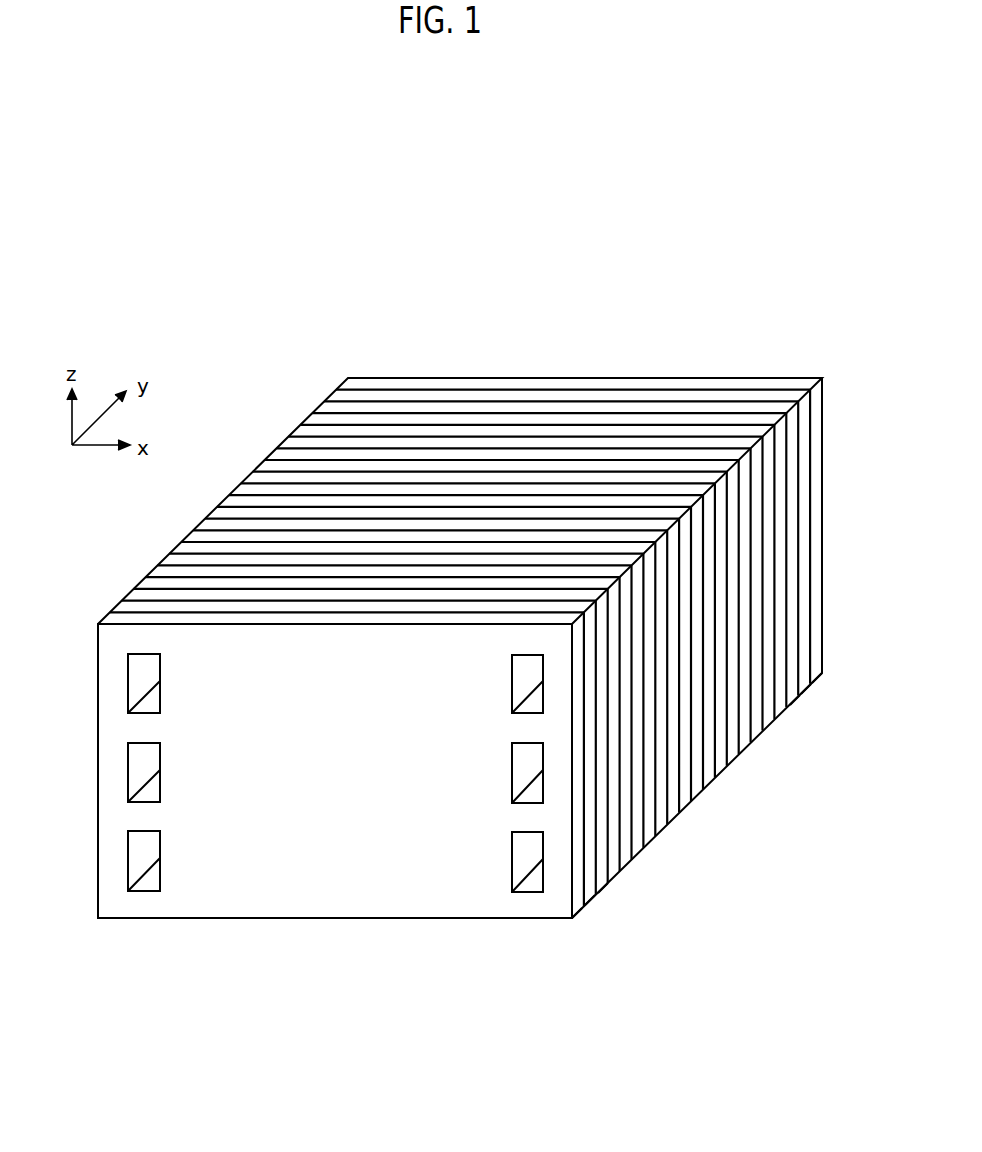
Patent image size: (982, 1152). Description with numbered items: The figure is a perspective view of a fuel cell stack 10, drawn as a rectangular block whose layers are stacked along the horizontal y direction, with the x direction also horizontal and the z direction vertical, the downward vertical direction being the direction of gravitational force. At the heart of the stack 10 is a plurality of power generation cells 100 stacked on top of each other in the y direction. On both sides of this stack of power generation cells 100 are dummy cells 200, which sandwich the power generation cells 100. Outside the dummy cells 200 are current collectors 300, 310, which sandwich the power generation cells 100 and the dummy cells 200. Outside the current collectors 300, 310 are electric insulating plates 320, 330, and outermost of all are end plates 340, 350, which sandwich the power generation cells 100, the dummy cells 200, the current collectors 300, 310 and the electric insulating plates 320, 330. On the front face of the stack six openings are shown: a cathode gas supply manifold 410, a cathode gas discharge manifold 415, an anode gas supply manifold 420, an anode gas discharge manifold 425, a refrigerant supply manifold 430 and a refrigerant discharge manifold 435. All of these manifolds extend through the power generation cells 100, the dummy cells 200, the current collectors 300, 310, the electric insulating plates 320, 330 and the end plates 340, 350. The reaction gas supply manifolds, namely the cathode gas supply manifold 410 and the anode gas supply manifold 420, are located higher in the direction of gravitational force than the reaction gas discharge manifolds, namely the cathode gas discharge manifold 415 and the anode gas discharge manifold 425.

The fuel cell stack 10 is at (255, 397).
The power generation cell 100 is at (768, 730).
The dummy cell 200 is at (780, 716).
The current collector 300 is at (603, 888).
The current collector 310 is at (795, 701).
The electric insulating plate 320 is at (590, 900).
The electric insulating plate 330 is at (806, 690).
The end plate 340 is at (577, 913).
The end plate 350 is at (817, 678).
The cathode gas supply manifold 410 is at (128, 677).
The cathode gas discharge manifold 415 is at (512, 859).
The anode gas supply manifold 420 is at (512, 678).
The anode gas discharge manifold 425 is at (128, 859).
The refrigerant supply manifold 430 is at (128, 776).
The refrigerant discharge manifold 435 is at (512, 776).